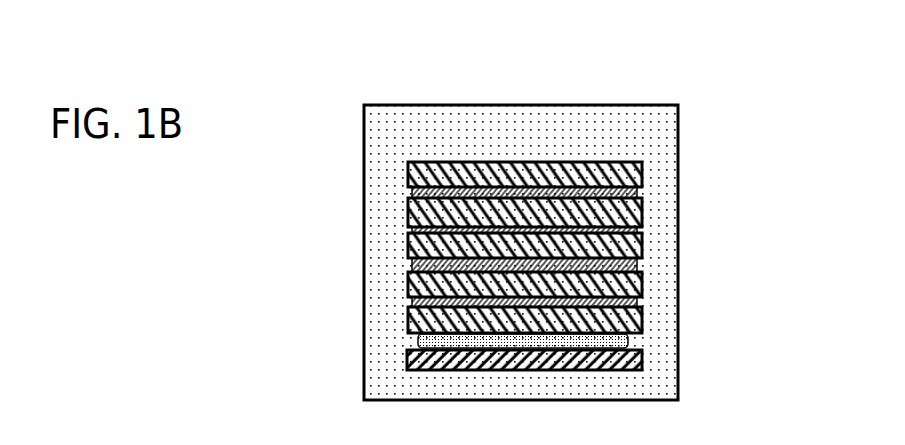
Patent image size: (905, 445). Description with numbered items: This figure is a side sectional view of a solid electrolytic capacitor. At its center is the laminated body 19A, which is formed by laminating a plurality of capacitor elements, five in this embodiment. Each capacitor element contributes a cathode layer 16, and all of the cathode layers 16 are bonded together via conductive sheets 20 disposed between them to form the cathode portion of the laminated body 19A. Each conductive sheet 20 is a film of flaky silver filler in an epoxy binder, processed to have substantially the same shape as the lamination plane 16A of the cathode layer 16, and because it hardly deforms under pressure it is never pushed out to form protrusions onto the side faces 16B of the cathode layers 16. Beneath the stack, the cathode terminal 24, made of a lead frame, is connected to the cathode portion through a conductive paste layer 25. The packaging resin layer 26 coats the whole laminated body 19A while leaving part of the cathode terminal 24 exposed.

The cathode layer 16 is at (587, 131).
The lamination plane 16A is at (598, 198).
The side face 16B is at (643, 180).
The laminated body 19A is at (522, 233).
The conductive sheet 20 is at (638, 266).
The cathode terminal 24 is at (642, 363).
The conductive paste layer 25 is at (633, 340).
The packaging resin layer 26 is at (380, 141).